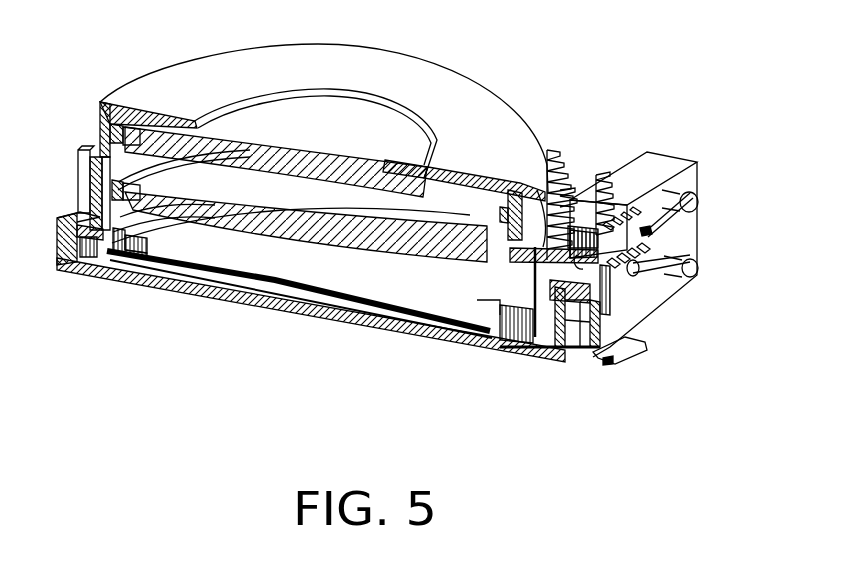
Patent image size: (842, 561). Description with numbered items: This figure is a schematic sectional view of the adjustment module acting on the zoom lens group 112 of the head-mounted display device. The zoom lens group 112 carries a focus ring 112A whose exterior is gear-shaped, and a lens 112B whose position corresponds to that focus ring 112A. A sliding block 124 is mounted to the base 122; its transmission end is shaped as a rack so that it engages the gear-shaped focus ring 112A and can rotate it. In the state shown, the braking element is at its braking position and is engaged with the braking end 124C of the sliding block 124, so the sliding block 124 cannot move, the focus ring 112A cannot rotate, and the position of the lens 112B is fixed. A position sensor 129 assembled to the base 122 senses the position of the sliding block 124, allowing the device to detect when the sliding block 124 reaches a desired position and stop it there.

The zoom lens group 112 is at (58, 268).
The focus ring 112A is at (561, 152).
The lens 112B is at (300, 233).
The base 122 is at (665, 172).
The sliding block 124 is at (538, 300).
The braking end 124C is at (645, 233).
The position sensor 129 is at (598, 172).